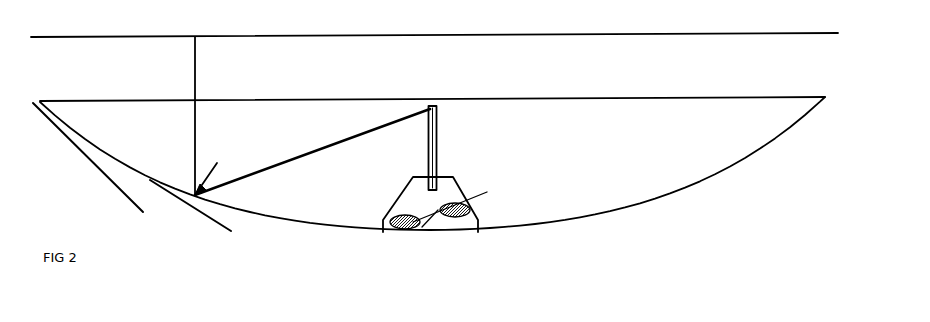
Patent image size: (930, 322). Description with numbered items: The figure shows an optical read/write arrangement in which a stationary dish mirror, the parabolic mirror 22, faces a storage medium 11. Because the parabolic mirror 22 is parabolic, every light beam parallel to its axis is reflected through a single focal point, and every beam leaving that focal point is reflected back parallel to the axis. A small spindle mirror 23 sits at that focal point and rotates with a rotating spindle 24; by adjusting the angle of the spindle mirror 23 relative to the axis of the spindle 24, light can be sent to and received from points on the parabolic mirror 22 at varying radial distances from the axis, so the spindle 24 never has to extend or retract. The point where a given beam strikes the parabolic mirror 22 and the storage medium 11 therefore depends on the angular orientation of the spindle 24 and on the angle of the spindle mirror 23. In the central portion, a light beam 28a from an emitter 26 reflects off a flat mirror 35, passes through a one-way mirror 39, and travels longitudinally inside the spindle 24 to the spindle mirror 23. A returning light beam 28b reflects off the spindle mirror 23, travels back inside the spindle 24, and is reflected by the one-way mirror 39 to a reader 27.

The storage medium 11 is at (433, 33).
The parabolic mirror 22 is at (701, 181).
The spindle mirror 23 is at (428, 108).
The rotating spindle 24 is at (438, 140).
The emitter 26 is at (401, 230).
The reader 27 is at (487, 192).
The light beam 28a is at (192, 70).
The returning light beam 28b is at (199, 70).
The flat mirror 35 is at (437, 224).
The one-way mirror 39 is at (438, 226).